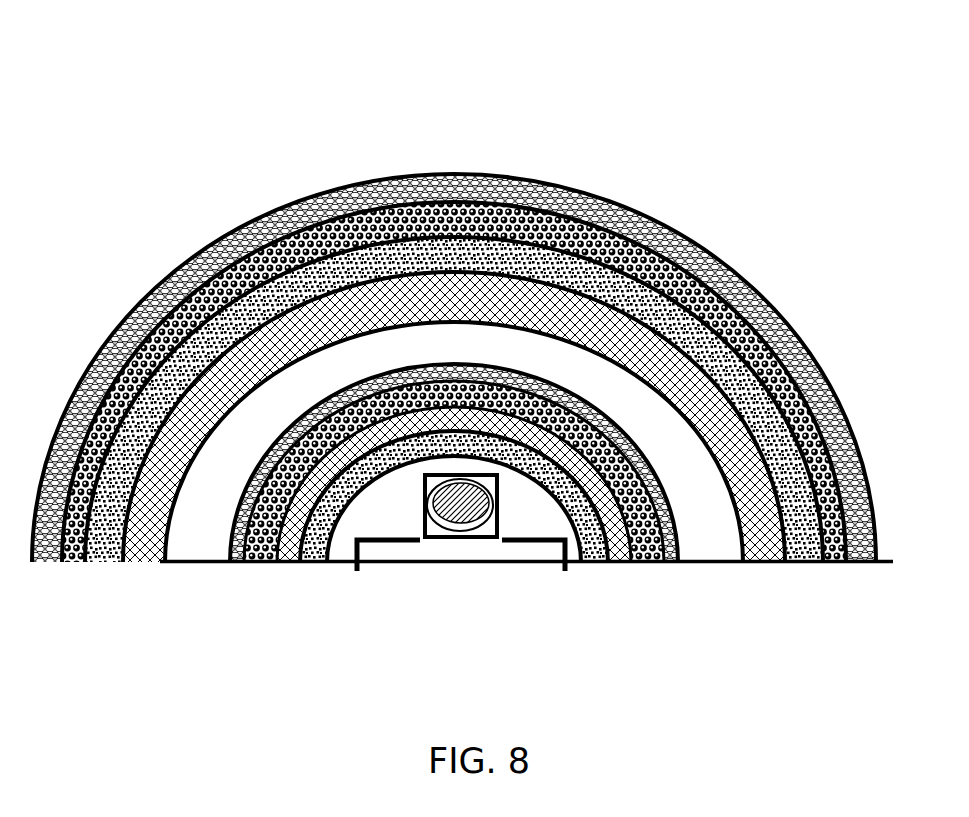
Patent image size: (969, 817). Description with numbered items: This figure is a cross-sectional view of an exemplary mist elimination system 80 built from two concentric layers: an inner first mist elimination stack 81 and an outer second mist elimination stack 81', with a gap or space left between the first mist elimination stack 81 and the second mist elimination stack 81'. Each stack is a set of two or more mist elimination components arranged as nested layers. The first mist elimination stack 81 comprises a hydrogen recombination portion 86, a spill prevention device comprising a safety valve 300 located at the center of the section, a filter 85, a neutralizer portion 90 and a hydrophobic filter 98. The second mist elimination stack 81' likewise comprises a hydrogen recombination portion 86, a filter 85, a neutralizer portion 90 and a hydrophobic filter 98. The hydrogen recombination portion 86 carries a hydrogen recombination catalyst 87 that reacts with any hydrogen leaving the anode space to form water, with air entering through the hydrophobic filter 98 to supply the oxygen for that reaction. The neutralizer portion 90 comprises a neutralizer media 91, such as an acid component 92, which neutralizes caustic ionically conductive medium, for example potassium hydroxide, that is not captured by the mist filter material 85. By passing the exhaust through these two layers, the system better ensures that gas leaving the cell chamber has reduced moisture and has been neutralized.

The mist elimination system 80 is at (264, 162).
The second mist elimination stack 81' is at (454, 327).
The first mist elimination stack 81 is at (454, 509).
The hydrophobic filter 98 is at (460, 192).
The neutralizer portion 90 is at (548, 182).
The neutralizer media 91 is at (585, 196).
The acid component 92 is at (615, 225).
The hydrogen recombination portion 86 is at (667, 258).
The hydrogen recombination catalyst 87 is at (718, 292).
The mist filter material 85 is at (750, 328).
The safety valve 300 is at (447, 540).